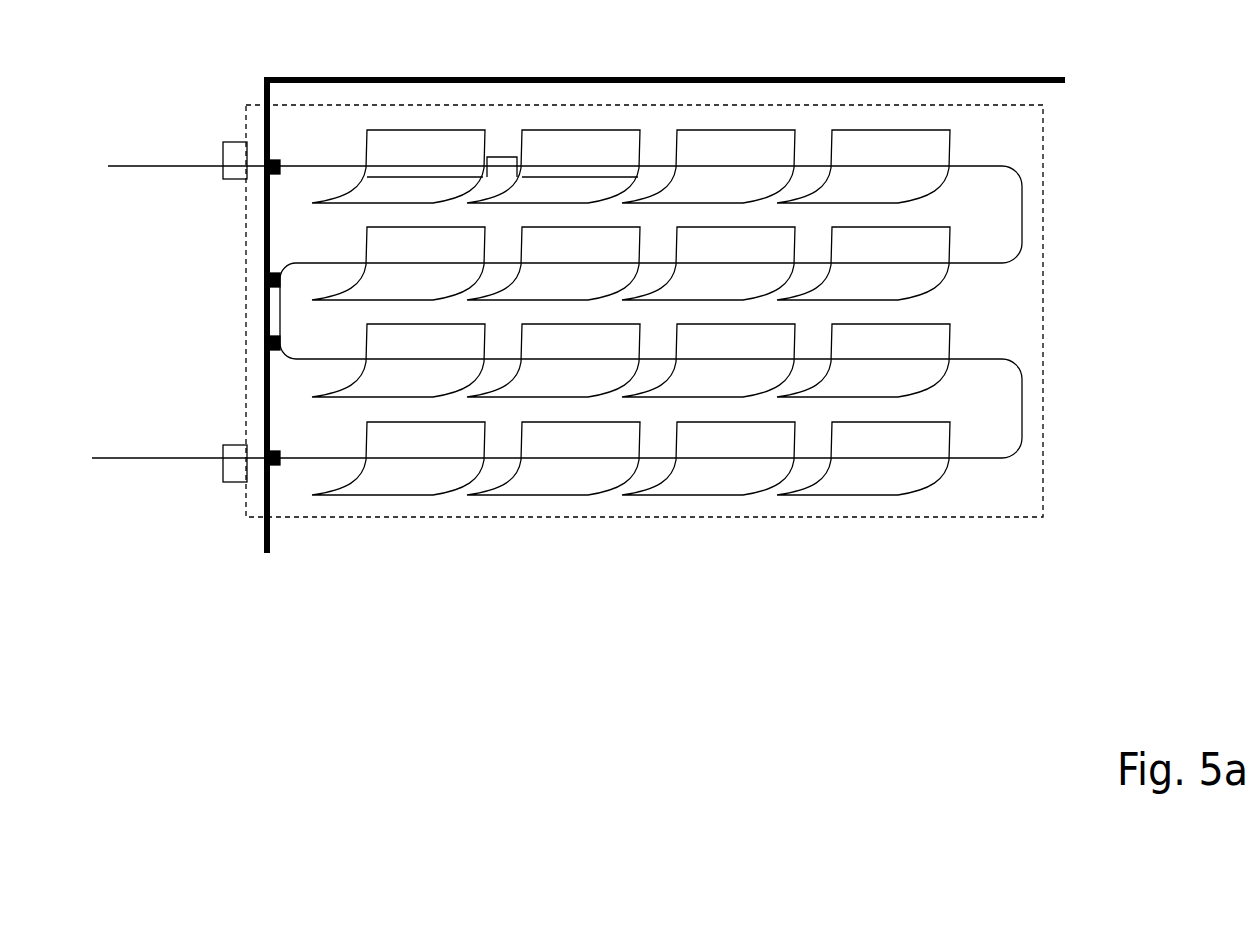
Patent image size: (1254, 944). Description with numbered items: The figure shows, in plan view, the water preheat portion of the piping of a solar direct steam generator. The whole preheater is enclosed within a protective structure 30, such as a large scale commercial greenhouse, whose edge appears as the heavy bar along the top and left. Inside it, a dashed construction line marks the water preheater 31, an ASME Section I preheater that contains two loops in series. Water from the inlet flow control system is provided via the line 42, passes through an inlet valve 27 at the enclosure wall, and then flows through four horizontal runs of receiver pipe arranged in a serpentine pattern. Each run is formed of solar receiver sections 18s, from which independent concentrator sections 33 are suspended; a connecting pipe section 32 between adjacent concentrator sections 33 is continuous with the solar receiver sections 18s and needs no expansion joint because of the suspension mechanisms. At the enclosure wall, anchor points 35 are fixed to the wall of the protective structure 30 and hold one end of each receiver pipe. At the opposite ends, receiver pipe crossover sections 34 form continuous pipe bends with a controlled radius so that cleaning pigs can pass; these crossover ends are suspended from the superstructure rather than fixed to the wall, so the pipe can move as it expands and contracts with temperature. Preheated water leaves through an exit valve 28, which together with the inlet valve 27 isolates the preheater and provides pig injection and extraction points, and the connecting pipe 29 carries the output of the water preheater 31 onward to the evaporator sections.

The protective structure 30 is at (358, 77).
The water preheater 31 is at (243, 104).
The inlet 42 is at (140, 161).
The inlet valve 27 is at (219, 141).
The connecting pipe 29 is at (140, 452).
The exit valve 28 is at (220, 443).
The receiver pipe crossover section 34 is at (284, 326).
The anchor point 35 is at (281, 178).
The solar receiver section 18s is at (423, 178).
The concentrator section 33 is at (397, 154).
The connecting pipe section 32 is at (512, 148).